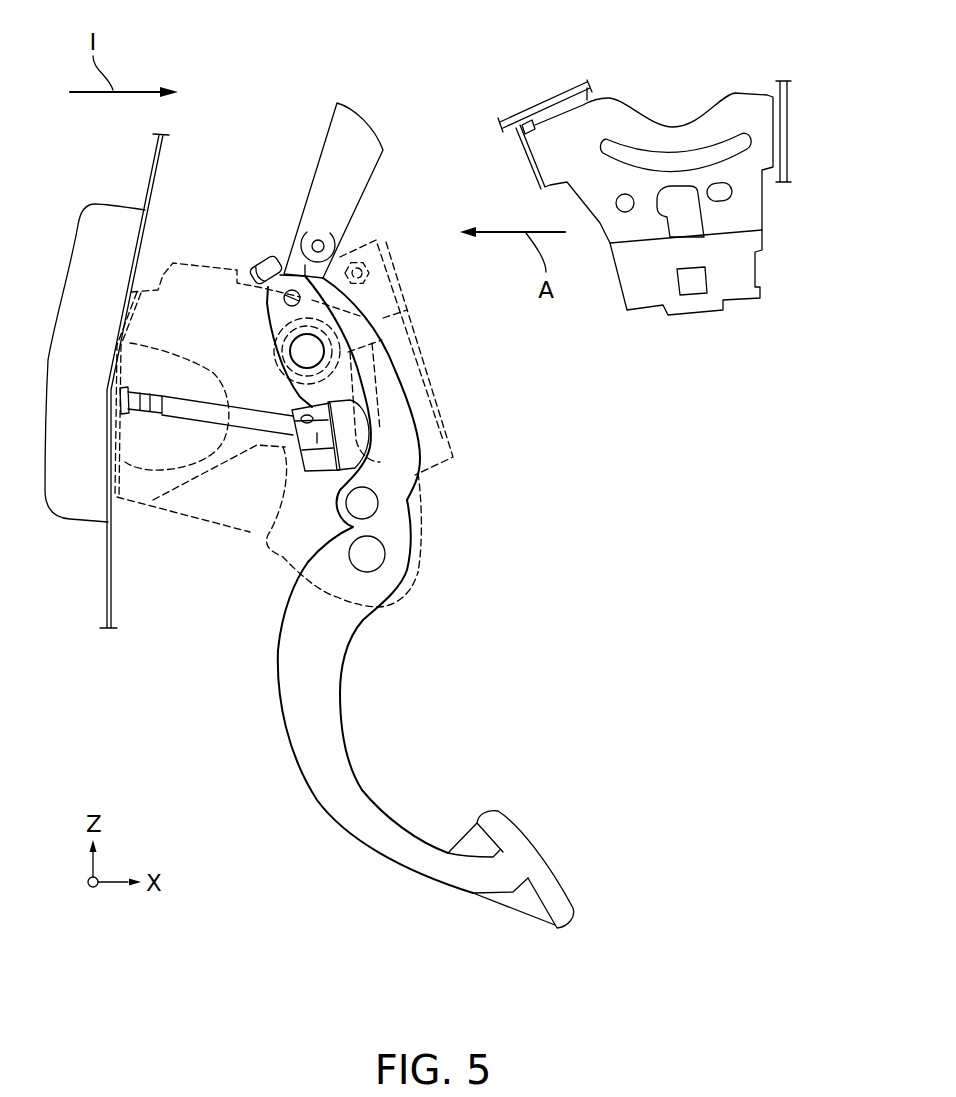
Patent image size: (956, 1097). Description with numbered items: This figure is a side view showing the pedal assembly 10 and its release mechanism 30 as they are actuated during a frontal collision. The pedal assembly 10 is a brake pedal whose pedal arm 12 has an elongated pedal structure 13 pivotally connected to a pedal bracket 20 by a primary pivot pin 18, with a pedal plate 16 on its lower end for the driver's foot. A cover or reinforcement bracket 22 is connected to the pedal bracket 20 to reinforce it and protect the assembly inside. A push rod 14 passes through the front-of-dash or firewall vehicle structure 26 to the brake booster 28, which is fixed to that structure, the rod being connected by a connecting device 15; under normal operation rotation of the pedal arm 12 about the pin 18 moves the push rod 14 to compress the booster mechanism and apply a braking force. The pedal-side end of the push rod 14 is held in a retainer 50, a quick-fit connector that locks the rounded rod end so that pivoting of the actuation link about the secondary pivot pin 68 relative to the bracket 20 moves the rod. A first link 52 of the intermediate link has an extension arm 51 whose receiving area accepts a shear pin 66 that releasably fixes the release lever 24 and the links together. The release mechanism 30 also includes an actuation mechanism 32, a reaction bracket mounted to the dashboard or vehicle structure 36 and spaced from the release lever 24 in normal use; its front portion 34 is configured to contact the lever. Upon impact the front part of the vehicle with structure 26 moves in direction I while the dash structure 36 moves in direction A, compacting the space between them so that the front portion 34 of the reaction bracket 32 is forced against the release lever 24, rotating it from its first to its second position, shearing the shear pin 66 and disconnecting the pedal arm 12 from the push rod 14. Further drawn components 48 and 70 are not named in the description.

The pedal assembly 10 is at (640, 597).
The pedal arm 12 is at (263, 699).
The elongated pedal structure 13 is at (350, 745).
The push rod 14 is at (195, 418).
The connecting device 15 is at (126, 391).
The pedal plate 16 is at (552, 853).
The primary pivot pin 18 is at (383, 556).
The pedal bracket 20 is at (222, 496).
The reinforcement bracket 22 is at (445, 425).
The release lever 24 is at (336, 150).
The vehicle structure 26 is at (158, 172).
The brake booster 28 is at (72, 530).
The release mechanism 30 is at (480, 96).
The actuation mechanism 32 is at (691, 104).
The front portion 34 is at (513, 159).
The dashboard 36 is at (563, 82).
The upper hole 48 is at (374, 502).
The retainer 50 is at (334, 472).
The extension arm 51 is at (303, 264).
The first link 52 is at (414, 480).
The shear pin 66 is at (314, 244).
The secondary pivot pin 68 is at (298, 352).
The stopper boss 70 is at (260, 274).